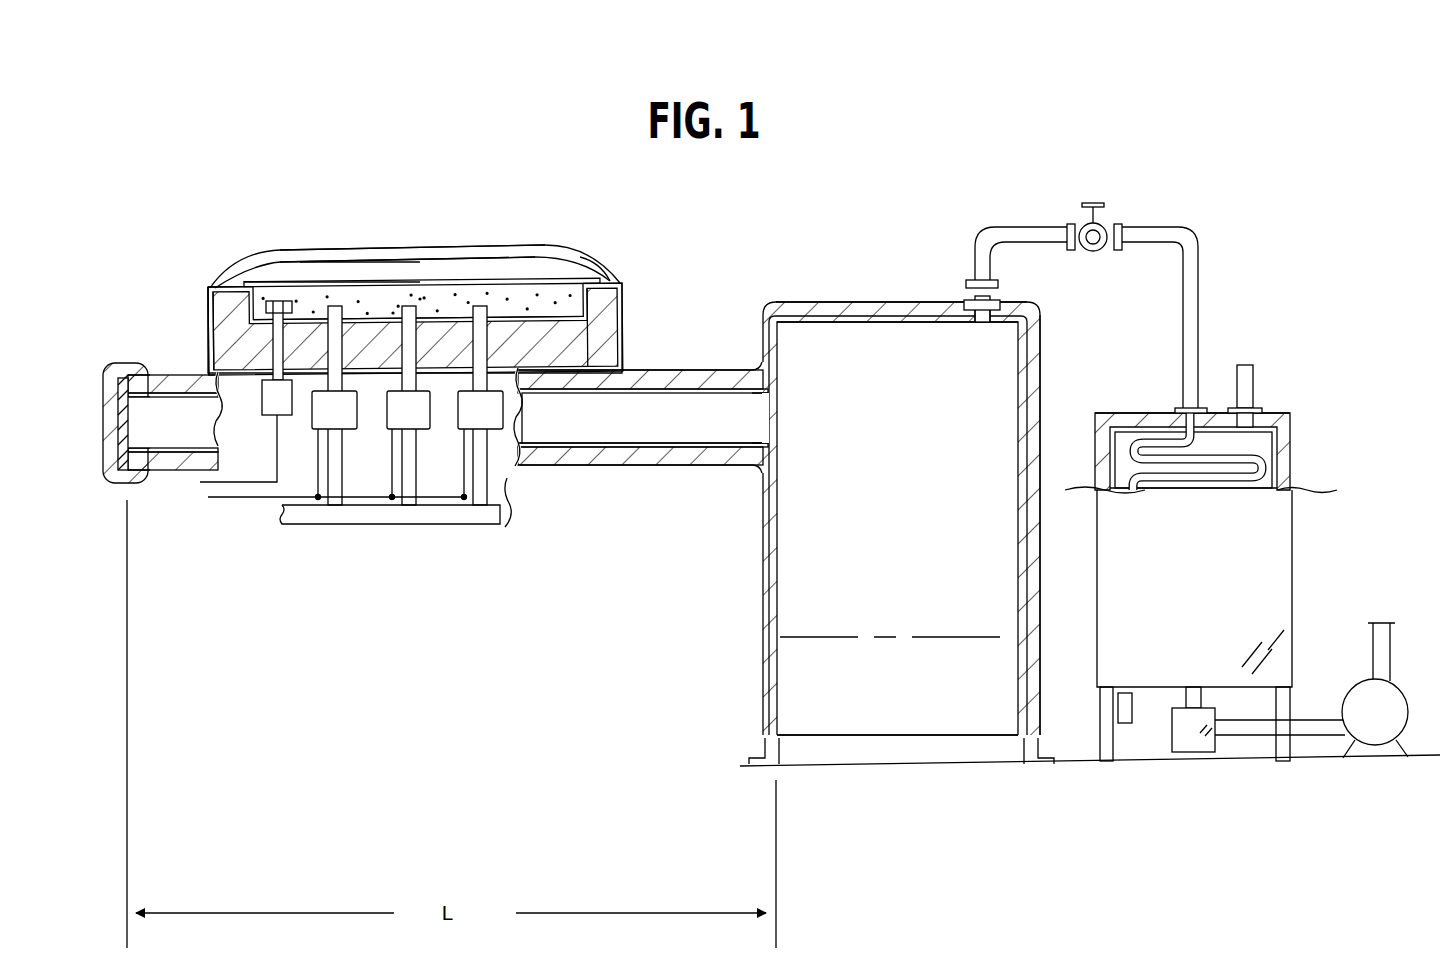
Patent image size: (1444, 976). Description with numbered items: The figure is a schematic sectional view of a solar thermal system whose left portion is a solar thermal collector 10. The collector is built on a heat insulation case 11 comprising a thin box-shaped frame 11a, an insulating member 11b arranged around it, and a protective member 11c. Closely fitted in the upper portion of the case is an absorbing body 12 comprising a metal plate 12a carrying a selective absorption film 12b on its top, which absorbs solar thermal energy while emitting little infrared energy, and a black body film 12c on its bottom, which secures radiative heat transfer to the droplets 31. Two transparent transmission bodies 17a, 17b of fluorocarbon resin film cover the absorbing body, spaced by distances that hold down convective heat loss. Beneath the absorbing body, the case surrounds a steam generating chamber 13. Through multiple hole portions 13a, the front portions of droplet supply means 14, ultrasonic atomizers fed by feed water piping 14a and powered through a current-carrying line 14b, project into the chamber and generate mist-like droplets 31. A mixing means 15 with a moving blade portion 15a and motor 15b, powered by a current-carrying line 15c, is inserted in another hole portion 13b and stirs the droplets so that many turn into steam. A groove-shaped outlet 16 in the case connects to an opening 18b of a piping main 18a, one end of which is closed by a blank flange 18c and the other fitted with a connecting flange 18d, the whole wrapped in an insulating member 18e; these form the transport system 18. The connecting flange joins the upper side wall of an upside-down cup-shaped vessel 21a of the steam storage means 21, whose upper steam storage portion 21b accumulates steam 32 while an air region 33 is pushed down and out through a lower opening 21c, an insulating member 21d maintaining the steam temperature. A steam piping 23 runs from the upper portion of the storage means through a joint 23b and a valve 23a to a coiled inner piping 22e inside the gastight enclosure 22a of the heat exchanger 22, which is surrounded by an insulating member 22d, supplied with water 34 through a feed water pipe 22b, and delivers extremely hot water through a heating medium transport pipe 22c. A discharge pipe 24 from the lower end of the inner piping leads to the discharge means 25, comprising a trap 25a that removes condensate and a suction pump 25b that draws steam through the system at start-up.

The solar thermal collector 10 is at (341, 150).
The heat insulation case 11 is at (143, 303).
The frame 11a is at (238, 290).
The insulating member 11b is at (233, 322).
The protective member 11c is at (209, 324).
The absorbing body 12 is at (628, 160).
The metal plate 12a is at (537, 282).
The selective absorption film 12b is at (517, 282).
The black body film 12c is at (542, 290).
The steam generating chamber 13 is at (498, 293).
The hole portions 13a is at (393, 322).
The hole portion 13b is at (307, 298).
The droplet supply means 14 is at (347, 418).
The feed water piping 14a is at (466, 522).
The current-carrying line 14b is at (430, 500).
The mixing means 15 is at (208, 596).
The moving blade portion 15a is at (272, 300).
The motor 15b is at (272, 408).
The current-carrying line 15c is at (200, 483).
The outlet 16 is at (562, 350).
The transmission body 17a is at (356, 282).
The transmission body 17b is at (387, 262).
The transport system 18 is at (655, 594).
The piping main 18a is at (592, 447).
The opening 18b is at (552, 378).
The blank flange 18c is at (120, 422).
The connecting flange 18d is at (766, 410).
The insulating member 18e is at (645, 458).
The steam storage means 21 is at (871, 208).
The vessel 21a is at (822, 302).
The steam storage portion 21b is at (912, 416).
The opening 21c is at (882, 742).
The insulating member 21d is at (1042, 356).
The heat exchanger 22 is at (1334, 407).
The enclosure 22a is at (1292, 438).
The feed water pipe 22b is at (1132, 708).
The heating medium transport pipe 22c is at (1254, 378).
The insulating member 22d is at (1285, 462).
The inner piping 22e is at (1183, 489).
The steam piping 23 is at (1162, 227).
The valve 23a is at (1105, 222).
The joint 23b is at (998, 291).
The discharge pipe 24 is at (1240, 718).
The discharge means 25 is at (1285, 857).
The trap 25a is at (1195, 734).
The suction pump 25b is at (1366, 726).
The droplets 31 is at (419, 297).
The steam 32 is at (619, 427).
The air region 33 is at (882, 687).
The water 34 is at (1247, 458).